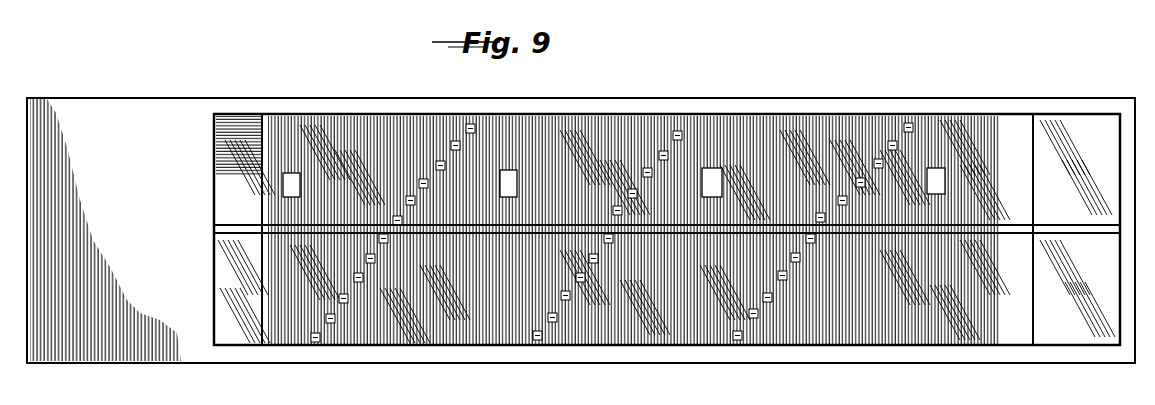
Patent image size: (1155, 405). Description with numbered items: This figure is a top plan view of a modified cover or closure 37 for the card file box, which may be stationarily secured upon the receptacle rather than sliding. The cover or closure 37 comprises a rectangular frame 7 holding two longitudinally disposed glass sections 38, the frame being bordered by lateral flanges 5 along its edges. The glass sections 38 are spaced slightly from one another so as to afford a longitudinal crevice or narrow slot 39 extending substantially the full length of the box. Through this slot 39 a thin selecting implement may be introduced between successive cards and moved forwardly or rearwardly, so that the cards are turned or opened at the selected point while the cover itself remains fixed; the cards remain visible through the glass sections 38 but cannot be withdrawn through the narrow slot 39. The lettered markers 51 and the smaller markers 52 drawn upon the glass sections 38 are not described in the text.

The lateral flanges 5 is at (123, 112).
The rigid channeled frame 7 is at (607, 350).
The cover or closure 37 is at (632, 236).
The glass sections 38 is at (600, 128).
The longitudinal crevice or narrow slot 39 is at (247, 229).
The lettered marker boxes 51 is at (717, 167).
The small marker boxes 52 is at (893, 140).